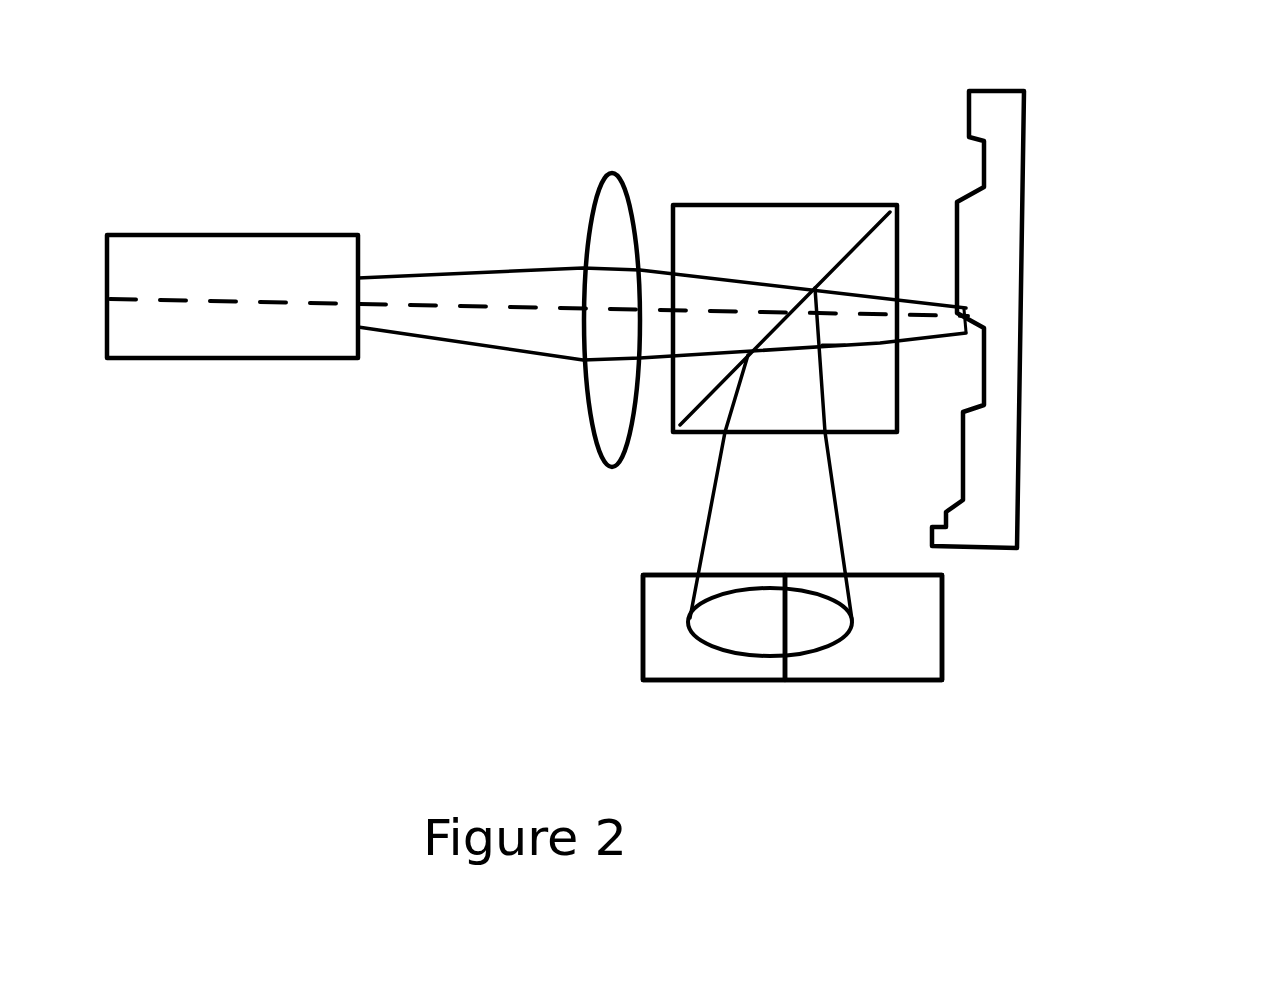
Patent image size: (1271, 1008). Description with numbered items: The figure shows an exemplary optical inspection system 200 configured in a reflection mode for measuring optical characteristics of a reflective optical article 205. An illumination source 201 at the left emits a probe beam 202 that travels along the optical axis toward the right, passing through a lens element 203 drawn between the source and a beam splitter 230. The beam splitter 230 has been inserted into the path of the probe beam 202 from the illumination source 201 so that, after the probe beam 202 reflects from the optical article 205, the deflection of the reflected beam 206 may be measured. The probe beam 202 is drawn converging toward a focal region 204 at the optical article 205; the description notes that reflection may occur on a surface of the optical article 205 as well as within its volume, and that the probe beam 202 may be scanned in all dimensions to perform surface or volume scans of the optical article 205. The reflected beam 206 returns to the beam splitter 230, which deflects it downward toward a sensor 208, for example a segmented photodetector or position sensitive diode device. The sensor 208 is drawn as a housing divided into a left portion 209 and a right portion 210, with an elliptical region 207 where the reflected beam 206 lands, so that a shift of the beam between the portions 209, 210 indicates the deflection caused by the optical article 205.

The optical inspection system 200 is at (252, 674).
The illumination source 201 is at (178, 356).
The probe beam 202 is at (465, 297).
The lens 203 is at (590, 403).
The focal spot 204 is at (976, 318).
The optical article 205 is at (999, 233).
The reflected beam 206 is at (846, 368).
The detector aperture 207 is at (835, 627).
The sensor 208 is at (636, 577).
The first detector segment 209 is at (683, 658).
The second detector segment 210 is at (868, 662).
The beam splitter 230 is at (787, 196).